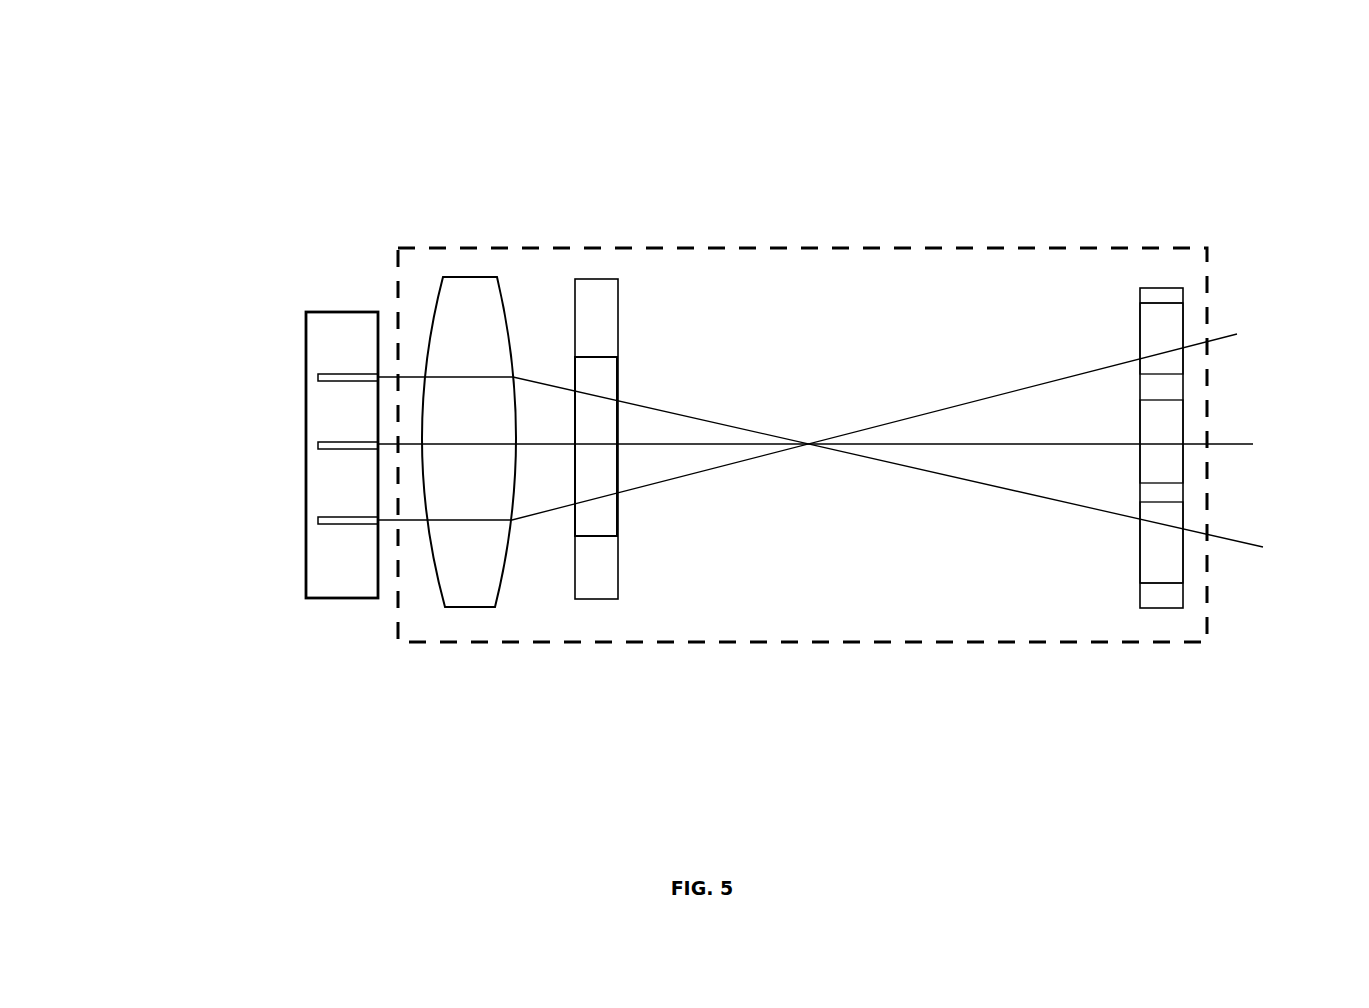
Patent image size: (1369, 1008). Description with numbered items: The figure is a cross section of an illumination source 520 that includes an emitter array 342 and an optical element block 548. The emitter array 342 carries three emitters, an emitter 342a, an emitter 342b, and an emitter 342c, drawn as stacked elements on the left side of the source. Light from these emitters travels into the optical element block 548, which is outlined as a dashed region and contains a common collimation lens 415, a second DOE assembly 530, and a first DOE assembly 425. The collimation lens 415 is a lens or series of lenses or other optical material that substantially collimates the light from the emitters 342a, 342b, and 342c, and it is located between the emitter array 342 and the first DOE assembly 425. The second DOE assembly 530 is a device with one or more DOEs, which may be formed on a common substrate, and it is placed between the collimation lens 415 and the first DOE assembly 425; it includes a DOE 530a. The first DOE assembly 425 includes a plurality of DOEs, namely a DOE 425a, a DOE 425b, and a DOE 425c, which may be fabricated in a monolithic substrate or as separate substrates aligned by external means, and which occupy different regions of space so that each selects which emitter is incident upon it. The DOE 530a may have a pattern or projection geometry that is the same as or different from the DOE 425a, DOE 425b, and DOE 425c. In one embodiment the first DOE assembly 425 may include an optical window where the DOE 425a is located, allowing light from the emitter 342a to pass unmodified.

The illumination source 520 is at (227, 137).
The emitter array 342 is at (328, 600).
The emitter 342a is at (367, 518).
The emitter 342b is at (365, 443).
The emitter 342c is at (367, 375).
The optical element block 548 is at (517, 248).
The collimation lens 415 is at (470, 607).
The second DOE assembly 530 is at (600, 600).
The DOE 530a is at (618, 384).
The first DOE assembly 425 is at (1165, 605).
The DOE 425a is at (1178, 332).
The DOE 425b is at (1175, 430).
The DOE 425c is at (1185, 512).